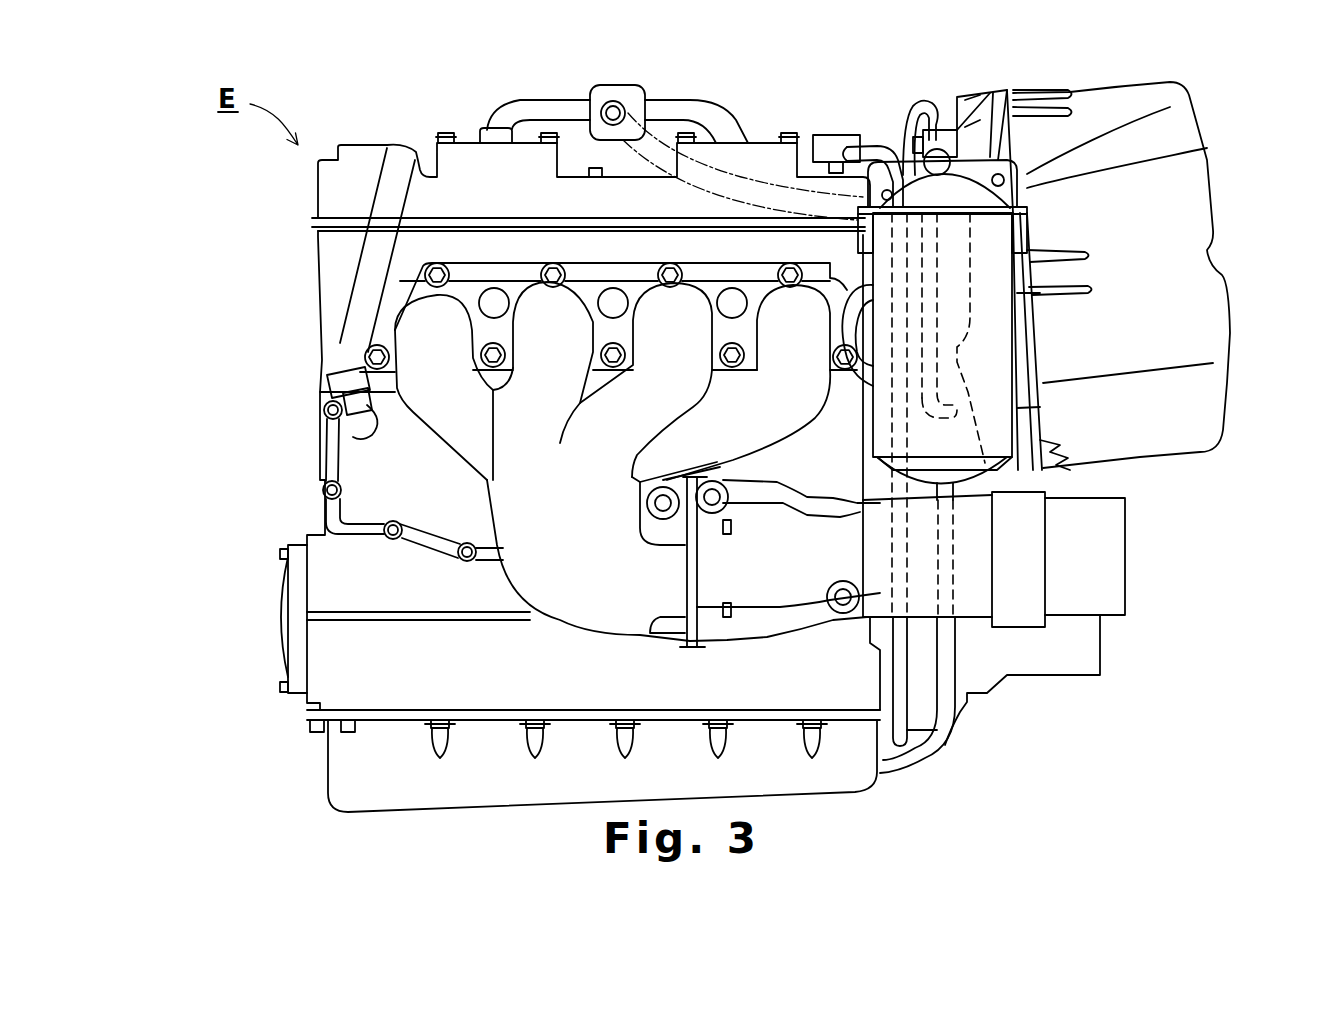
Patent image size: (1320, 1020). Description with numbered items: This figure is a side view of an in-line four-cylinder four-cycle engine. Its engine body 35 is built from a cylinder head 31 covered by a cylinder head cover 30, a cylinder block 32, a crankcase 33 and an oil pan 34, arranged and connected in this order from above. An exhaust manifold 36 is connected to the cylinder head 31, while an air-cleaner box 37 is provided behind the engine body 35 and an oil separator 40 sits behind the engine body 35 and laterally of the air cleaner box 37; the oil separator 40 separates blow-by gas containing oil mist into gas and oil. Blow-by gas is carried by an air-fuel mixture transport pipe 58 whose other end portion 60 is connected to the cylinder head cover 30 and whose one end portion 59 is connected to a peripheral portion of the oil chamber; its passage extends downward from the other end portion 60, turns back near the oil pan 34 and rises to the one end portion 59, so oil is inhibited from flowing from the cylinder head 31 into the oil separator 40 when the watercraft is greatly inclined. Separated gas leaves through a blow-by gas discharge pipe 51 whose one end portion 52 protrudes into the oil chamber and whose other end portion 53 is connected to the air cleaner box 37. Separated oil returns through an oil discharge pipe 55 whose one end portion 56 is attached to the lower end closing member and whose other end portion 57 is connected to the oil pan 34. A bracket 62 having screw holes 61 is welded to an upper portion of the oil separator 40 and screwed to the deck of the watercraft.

The cylinder head cover 30 is at (325, 193).
The cylinder head 31 is at (325, 273).
The cylinder block 32 is at (325, 437).
The crankcase 33 is at (325, 583).
The oil pan 34 is at (345, 782).
The engine body 35 is at (286, 338).
The exhaust manifold 36 is at (553, 577).
The air-cleaner box 37 is at (1197, 185).
The oil separator 40 is at (1033, 423).
The blow-by gas discharge pipe 51 is at (947, 180).
The one end portion of blow-by gas discharge pipe 52 is at (963, 193).
The other end portion of blow-by gas discharge pipe 53 is at (963, 420).
The oil discharge pipe 55 is at (937, 740).
The one end portion of oil discharge pipe 56 is at (953, 492).
The other end portion of oil discharge pipe 57 is at (887, 770).
The air-fuel mixture transport pipe 58 is at (887, 172).
The one end portion of air-fuel mixture transport pipe 59 is at (855, 295).
The other end portion of air-fuel mixture transport pipe 60 is at (862, 268).
The screw holes 61 is at (893, 165).
The bracket 62 is at (1200, 150).